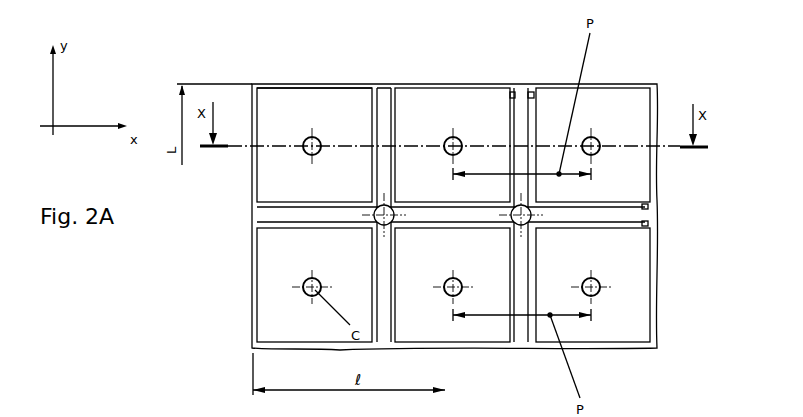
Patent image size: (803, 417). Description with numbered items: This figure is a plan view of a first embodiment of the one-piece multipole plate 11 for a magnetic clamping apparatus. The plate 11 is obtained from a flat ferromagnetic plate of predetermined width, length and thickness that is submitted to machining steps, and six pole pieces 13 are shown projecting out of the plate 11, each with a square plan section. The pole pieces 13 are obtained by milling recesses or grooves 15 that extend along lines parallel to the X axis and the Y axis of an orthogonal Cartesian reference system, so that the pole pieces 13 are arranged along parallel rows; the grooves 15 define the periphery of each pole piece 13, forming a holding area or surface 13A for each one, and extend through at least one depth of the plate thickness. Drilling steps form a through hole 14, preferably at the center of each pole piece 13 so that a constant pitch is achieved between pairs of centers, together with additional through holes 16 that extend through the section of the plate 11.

The plate 11 is at (671, 76).
The pole piece 13 is at (269, 95).
The holding area 13A is at (349, 95).
The hole 14 is at (296, 277).
The groove 15 is at (531, 92).
The additional through hole 16 is at (391, 222).